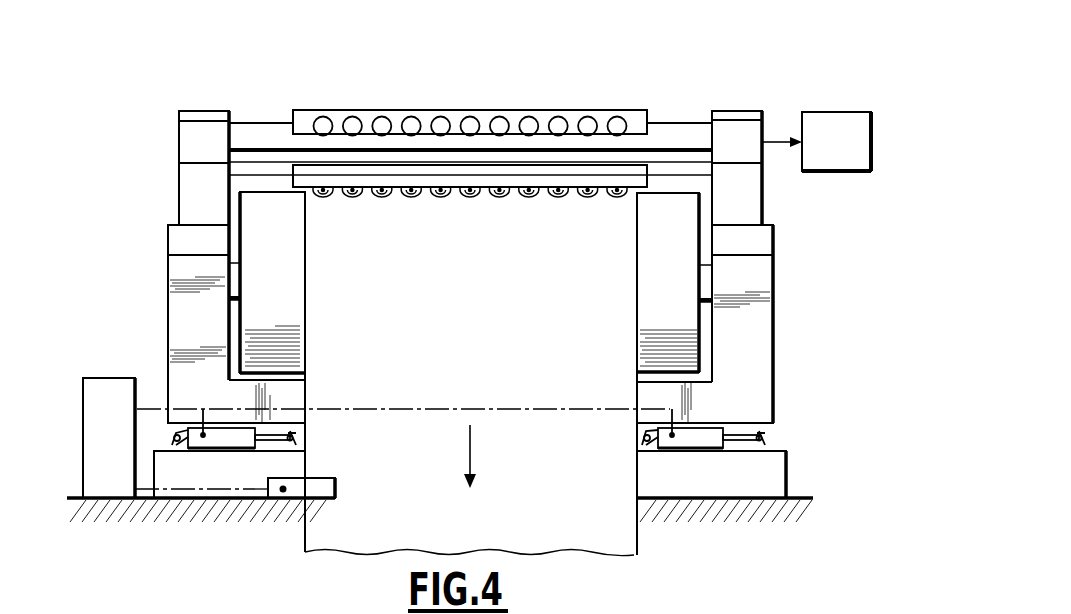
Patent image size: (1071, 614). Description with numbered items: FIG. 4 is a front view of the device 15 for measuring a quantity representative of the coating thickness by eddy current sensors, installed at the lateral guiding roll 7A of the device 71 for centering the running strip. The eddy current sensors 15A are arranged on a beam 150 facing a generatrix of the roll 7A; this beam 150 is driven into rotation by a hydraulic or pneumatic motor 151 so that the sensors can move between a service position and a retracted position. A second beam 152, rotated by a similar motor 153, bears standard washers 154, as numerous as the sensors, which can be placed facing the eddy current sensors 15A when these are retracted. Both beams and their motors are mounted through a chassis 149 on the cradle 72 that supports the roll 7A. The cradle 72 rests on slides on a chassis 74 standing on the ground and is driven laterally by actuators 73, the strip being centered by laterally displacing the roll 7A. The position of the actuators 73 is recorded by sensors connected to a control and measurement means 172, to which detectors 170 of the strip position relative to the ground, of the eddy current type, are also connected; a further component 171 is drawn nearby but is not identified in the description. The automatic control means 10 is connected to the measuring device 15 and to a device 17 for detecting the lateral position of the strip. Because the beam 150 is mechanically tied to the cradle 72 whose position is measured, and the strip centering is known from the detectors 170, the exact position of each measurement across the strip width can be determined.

The automatic control means 10 is at (832, 118).
The device for measuring thickness by eddy current sensors 15 is at (660, 92).
The eddy current sensors 15A is at (323, 197).
The device for detecting the lateral position of the strip 17 is at (107, 523).
The device for centering the strip 71 is at (142, 262).
The cradle 72 is at (752, 378).
The actuators 73 is at (223, 437).
The chassis 74 is at (717, 478).
The lateral guiding roll 7A is at (688, 345).
The chassis 149 is at (179, 186).
The beam 150 is at (265, 175).
The motor 151 is at (752, 178).
The second beam 152 is at (303, 118).
The motor 153 is at (736, 135).
The standard washers 154 is at (383, 126).
The detectors of the position of the strip 170 is at (297, 494).
The axis 171 is at (145, 408).
The control and measurement means 172 is at (98, 395).